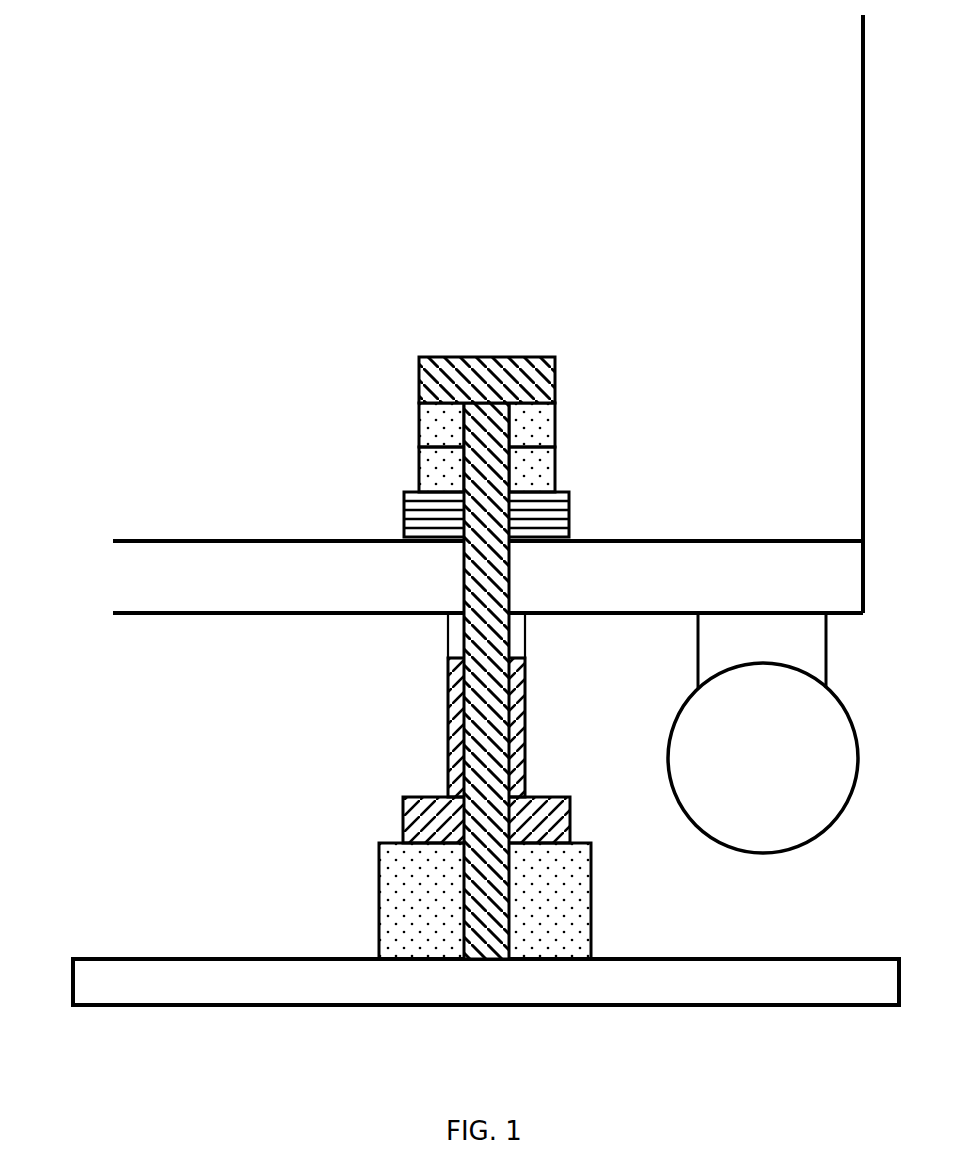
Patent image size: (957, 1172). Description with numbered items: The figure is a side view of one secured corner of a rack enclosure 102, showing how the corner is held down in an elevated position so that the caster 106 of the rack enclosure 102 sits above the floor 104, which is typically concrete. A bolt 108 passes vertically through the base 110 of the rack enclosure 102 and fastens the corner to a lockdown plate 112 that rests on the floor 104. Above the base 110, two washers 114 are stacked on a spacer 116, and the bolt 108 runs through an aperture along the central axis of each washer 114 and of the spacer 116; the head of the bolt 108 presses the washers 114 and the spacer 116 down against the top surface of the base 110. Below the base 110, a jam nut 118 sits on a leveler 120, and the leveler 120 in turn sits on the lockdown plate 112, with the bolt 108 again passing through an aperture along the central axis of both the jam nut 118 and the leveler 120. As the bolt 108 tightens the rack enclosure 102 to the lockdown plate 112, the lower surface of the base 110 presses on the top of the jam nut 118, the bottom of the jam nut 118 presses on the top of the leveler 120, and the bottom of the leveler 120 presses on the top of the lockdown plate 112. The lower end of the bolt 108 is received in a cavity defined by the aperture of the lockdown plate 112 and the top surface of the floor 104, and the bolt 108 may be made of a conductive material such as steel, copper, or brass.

The rack enclosure 102 is at (862, 200).
The floor 104 is at (97, 957).
The caster 106 is at (763, 733).
The bolt 108 is at (555, 380).
The base 110 is at (488, 577).
The lockdown plate 112 is at (379, 898).
The washer 114 is at (419, 472).
The spacer 116 is at (569, 520).
The jam nut 118 is at (448, 637).
The leveler 120 is at (448, 757).